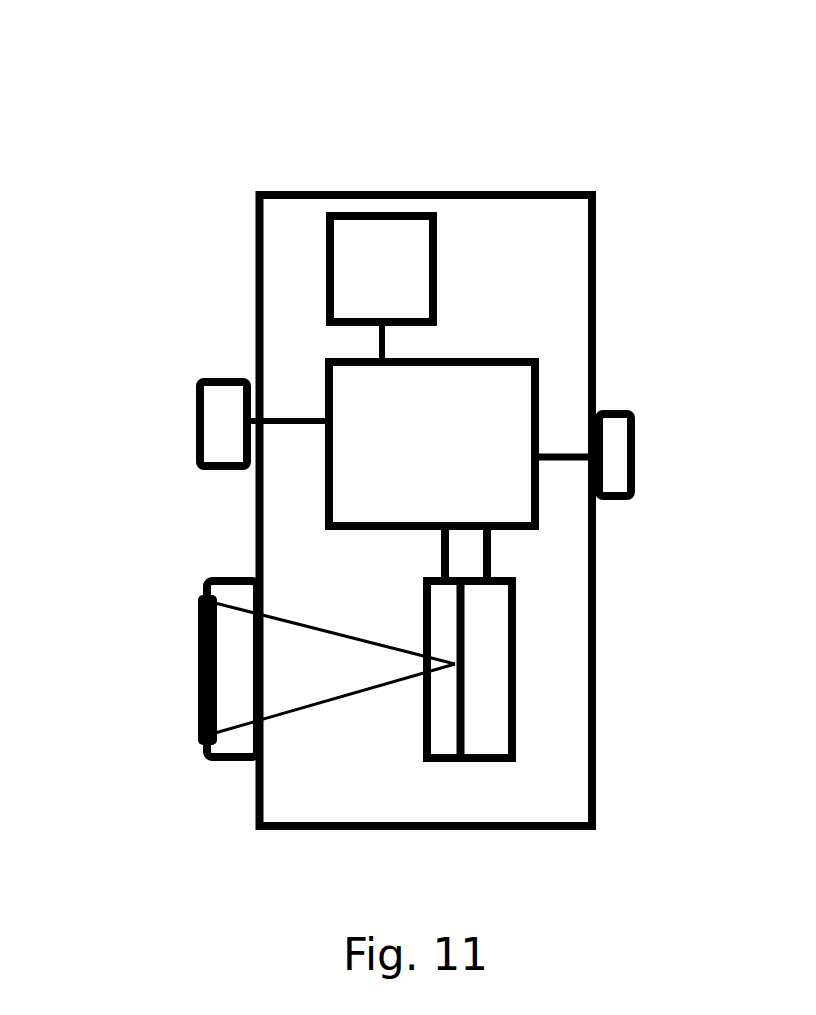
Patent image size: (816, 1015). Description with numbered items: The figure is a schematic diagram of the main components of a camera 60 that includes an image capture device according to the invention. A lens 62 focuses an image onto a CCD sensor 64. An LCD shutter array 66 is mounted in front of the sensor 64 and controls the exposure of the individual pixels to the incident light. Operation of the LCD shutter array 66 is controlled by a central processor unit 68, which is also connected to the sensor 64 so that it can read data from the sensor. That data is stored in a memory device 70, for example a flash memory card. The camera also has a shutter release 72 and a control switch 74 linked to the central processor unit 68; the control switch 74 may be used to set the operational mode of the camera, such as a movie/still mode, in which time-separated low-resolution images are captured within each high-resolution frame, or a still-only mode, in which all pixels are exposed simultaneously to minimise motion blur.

The camera 60 is at (601, 153).
The lens 62 is at (200, 693).
The CCD sensor 64 is at (488, 627).
The LCD shutter array 66 is at (438, 722).
The central processor unit 68 is at (492, 392).
The memory device 70 is at (375, 238).
The shutter release 72 is at (218, 392).
The control switch 74 is at (615, 447).